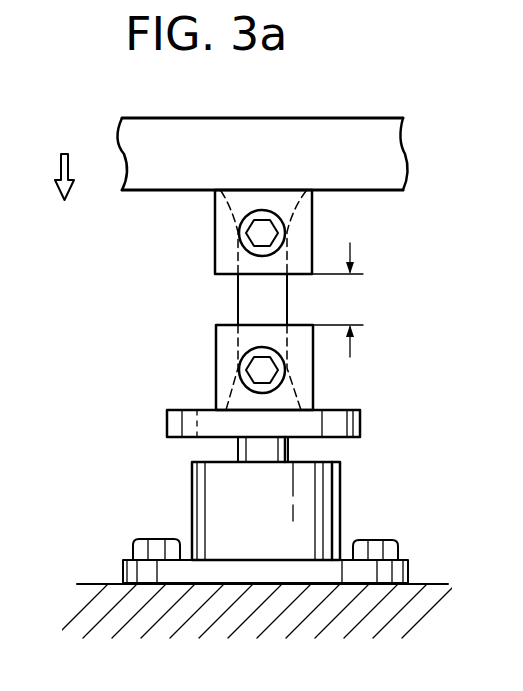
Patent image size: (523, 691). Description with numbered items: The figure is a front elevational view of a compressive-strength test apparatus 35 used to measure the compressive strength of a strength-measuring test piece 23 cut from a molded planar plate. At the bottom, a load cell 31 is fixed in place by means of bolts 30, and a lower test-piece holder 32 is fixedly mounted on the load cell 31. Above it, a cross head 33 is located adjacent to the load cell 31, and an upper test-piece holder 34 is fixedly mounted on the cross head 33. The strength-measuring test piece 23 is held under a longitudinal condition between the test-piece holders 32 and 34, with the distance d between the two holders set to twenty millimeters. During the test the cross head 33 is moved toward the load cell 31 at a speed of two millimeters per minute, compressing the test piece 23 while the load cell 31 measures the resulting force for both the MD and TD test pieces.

The cross head 33 is at (394, 152).
The test-piece holder 34 is at (316, 227).
The strength-measuring test piece 23 is at (240, 286).
The compressive-strength test apparatus 35 is at (251, 300).
The test-piece holder 32 is at (318, 388).
The load cell 31 is at (346, 490).
The bolts 30 is at (158, 539).